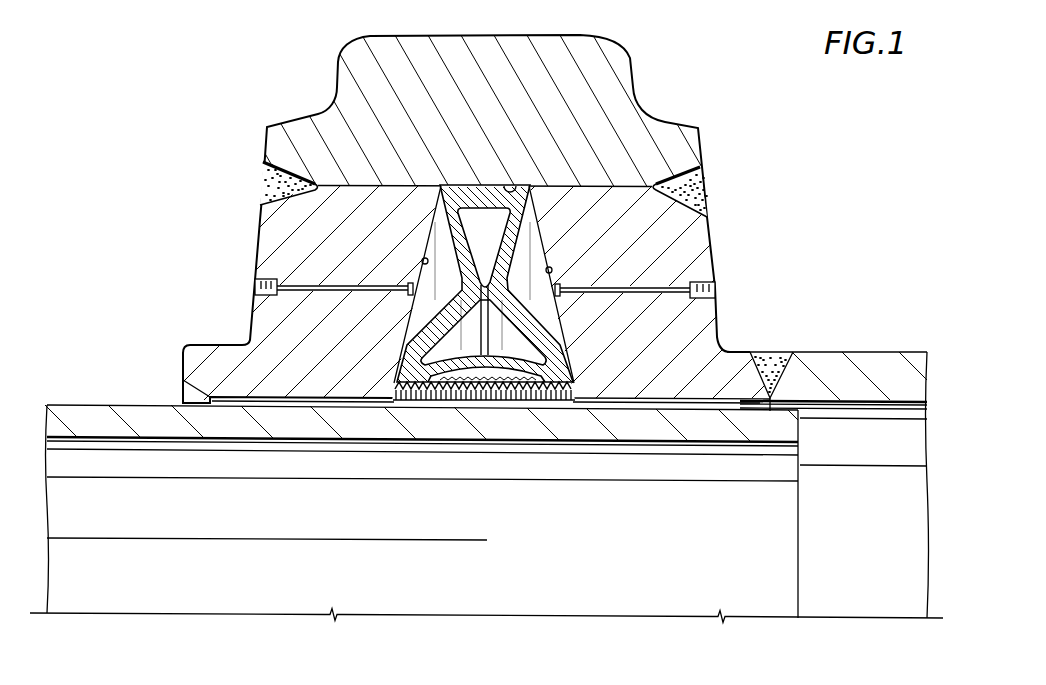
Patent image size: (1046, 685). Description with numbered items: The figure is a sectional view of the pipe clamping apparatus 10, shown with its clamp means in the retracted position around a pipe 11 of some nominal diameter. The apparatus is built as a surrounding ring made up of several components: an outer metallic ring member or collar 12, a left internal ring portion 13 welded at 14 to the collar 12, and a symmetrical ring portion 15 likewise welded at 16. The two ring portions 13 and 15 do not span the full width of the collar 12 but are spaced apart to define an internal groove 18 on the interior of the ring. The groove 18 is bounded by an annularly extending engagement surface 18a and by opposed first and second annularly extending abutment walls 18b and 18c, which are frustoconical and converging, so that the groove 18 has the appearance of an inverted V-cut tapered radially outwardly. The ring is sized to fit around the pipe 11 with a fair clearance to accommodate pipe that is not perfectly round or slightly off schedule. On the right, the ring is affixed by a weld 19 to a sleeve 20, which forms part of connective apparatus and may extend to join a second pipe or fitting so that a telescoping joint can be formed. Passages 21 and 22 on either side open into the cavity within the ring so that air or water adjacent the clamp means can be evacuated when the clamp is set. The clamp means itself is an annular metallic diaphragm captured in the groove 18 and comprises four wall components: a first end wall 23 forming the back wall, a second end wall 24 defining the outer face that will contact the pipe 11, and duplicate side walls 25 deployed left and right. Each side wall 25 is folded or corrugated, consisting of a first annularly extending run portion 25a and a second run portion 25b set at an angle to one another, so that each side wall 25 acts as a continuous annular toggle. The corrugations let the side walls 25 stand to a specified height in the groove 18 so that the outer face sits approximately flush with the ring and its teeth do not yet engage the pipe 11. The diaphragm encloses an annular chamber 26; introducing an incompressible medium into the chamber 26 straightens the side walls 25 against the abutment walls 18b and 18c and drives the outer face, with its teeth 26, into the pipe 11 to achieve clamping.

The pipe clamping apparatus 10 is at (160, 145).
The pipe 11 is at (85, 405).
The outer metallic ring member or collar 12 is at (620, 74).
The left internal ring portion 13 is at (263, 238).
The weld 14 is at (262, 178).
The ring portion 15 is at (703, 233).
The weld 16 is at (700, 180).
The internal groove 18 is at (422, 240).
The engagement surface 18a is at (511, 188).
The second abutment wall 18b is at (552, 272).
The first abutment wall 18c is at (424, 258).
The weld 19 is at (770, 356).
The sleeve 20 is at (860, 352).
The passage 21 is at (255, 289).
The passage 22 is at (716, 288).
The first end wall 23 is at (473, 218).
The second end wall 24 is at (555, 388).
The side walls 25 is at (538, 244).
The first run portion 25a is at (516, 247).
The second run portion 25b is at (553, 338).
The annular chamber 26 is at (462, 197).